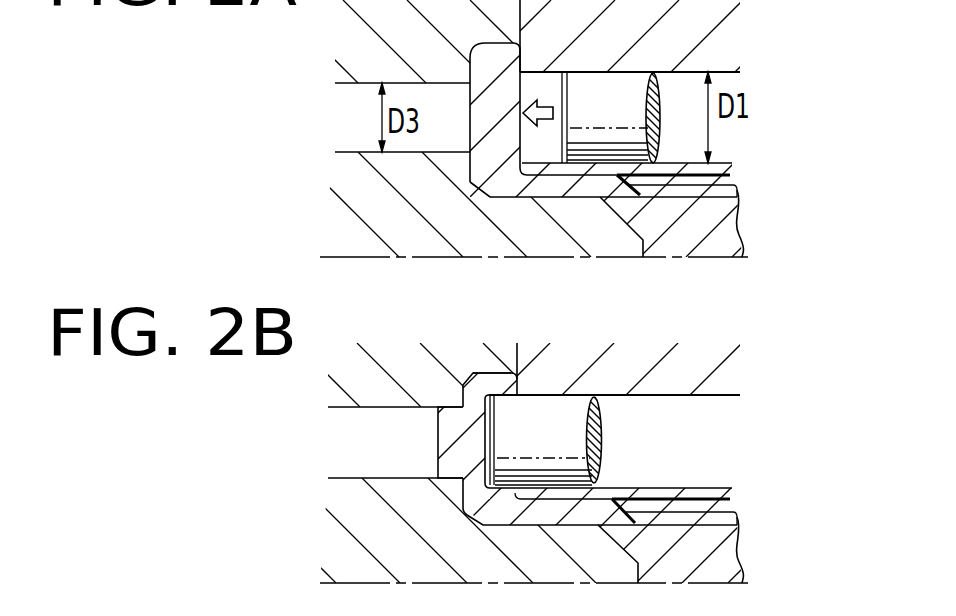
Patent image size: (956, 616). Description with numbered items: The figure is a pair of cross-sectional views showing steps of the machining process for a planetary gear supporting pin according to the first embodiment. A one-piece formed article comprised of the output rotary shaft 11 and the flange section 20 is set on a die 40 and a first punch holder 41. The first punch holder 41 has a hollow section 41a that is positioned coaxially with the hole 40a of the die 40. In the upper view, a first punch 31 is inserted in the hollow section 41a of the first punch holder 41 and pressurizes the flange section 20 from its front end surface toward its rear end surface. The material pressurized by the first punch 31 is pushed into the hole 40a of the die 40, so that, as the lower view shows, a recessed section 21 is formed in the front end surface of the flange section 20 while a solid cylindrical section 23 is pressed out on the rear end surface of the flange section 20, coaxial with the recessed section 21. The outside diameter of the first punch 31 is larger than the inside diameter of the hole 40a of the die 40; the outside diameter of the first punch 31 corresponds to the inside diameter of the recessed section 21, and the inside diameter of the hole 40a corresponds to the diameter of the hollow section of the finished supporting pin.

In FIG. 2A, the output rotary shaft 11 is at (730, 227).
In FIG. 2B, the output rotary shaft 11 is at (717, 558).
In FIG. 2A, the flange section 20 is at (493, 55).
In FIG. 2B, the flange section 20 is at (500, 378).
In FIG. 2B, the recessed section 21 is at (492, 377).
In FIG. 2B, the solid cylindrical section 23 is at (438, 428).
In FIG. 2A, the first punch 31 is at (632, 135).
In FIG. 2B, the first punch 31 is at (580, 450).
In FIG. 2A, the die 40 is at (343, 43).
In FIG. 2B, the die 40 is at (345, 376).
In FIG. 2A, the hole of the die 40a is at (357, 152).
In FIG. 2B, the hole of the die 40a is at (353, 476).
In FIG. 2A, the first punch holder 41 is at (718, 47).
In FIG. 2B, the first punch holder 41 is at (720, 377).
In FIG. 2A, the hollow section of the first punch holder 41a is at (722, 152).
In FIG. 2B, the hollow section of the first punch holder 41a is at (717, 478).